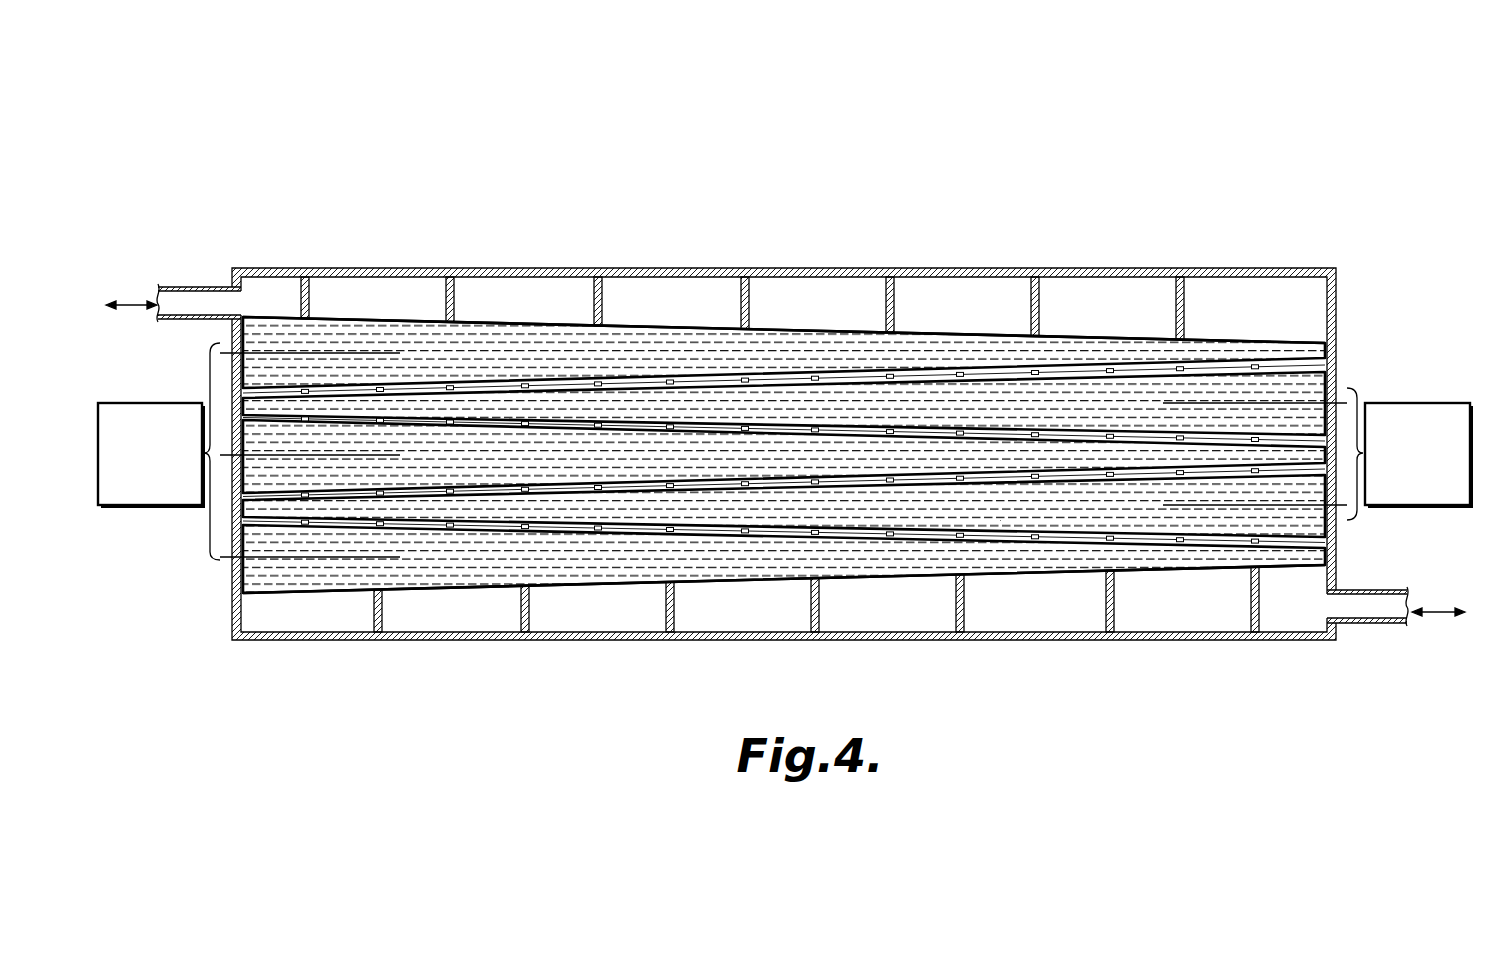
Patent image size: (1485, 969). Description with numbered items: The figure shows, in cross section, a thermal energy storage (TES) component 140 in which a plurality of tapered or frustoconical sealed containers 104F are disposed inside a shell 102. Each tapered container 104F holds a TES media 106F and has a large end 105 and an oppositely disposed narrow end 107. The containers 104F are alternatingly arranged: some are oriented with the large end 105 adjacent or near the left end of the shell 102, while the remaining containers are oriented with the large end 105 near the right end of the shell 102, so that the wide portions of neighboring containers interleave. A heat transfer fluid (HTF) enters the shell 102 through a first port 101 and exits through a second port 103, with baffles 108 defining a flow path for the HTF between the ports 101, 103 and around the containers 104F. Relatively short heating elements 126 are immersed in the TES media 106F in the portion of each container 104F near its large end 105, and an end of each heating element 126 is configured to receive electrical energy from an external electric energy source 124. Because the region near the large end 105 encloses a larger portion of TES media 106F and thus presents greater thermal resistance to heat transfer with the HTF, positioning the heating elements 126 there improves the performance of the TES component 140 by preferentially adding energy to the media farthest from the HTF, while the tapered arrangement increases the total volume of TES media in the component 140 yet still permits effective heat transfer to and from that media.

The TES component 140 is at (852, 214).
The first port 101 is at (208, 287).
The shell 102 is at (557, 268).
The second port 103 is at (1387, 590).
The tapered sealed containers 104F is at (1081, 328).
The large end 105 is at (243, 325).
The TES media 106F is at (1045, 536).
The narrow end 107 is at (240, 396).
The baffles 108 is at (896, 300).
The external electric energy source 124 is at (150, 403).
The heating elements 126 is at (392, 455).